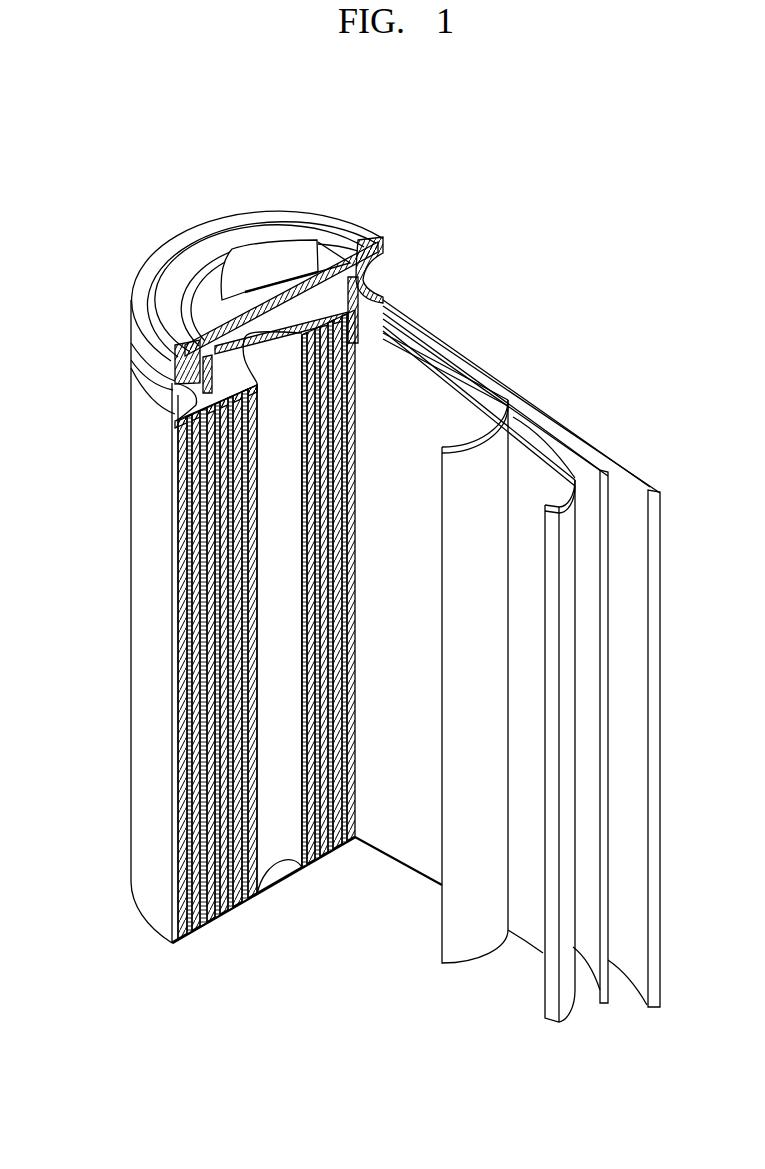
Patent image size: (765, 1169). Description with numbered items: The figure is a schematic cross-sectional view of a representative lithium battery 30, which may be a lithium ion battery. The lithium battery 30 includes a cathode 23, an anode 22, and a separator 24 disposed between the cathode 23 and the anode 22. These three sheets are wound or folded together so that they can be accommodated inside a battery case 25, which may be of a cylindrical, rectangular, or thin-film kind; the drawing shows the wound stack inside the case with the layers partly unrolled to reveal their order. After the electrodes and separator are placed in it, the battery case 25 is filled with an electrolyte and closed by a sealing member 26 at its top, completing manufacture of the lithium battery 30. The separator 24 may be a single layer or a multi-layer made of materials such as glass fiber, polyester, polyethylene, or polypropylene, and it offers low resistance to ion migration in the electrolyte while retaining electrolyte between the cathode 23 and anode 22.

The lithium battery 30 is at (328, 156).
The battery case 25 is at (137, 620).
The sealing member 26 is at (250, 255).
The anode 22 is at (642, 467).
The cathode 23 is at (562, 453).
The separator 24 is at (490, 398).